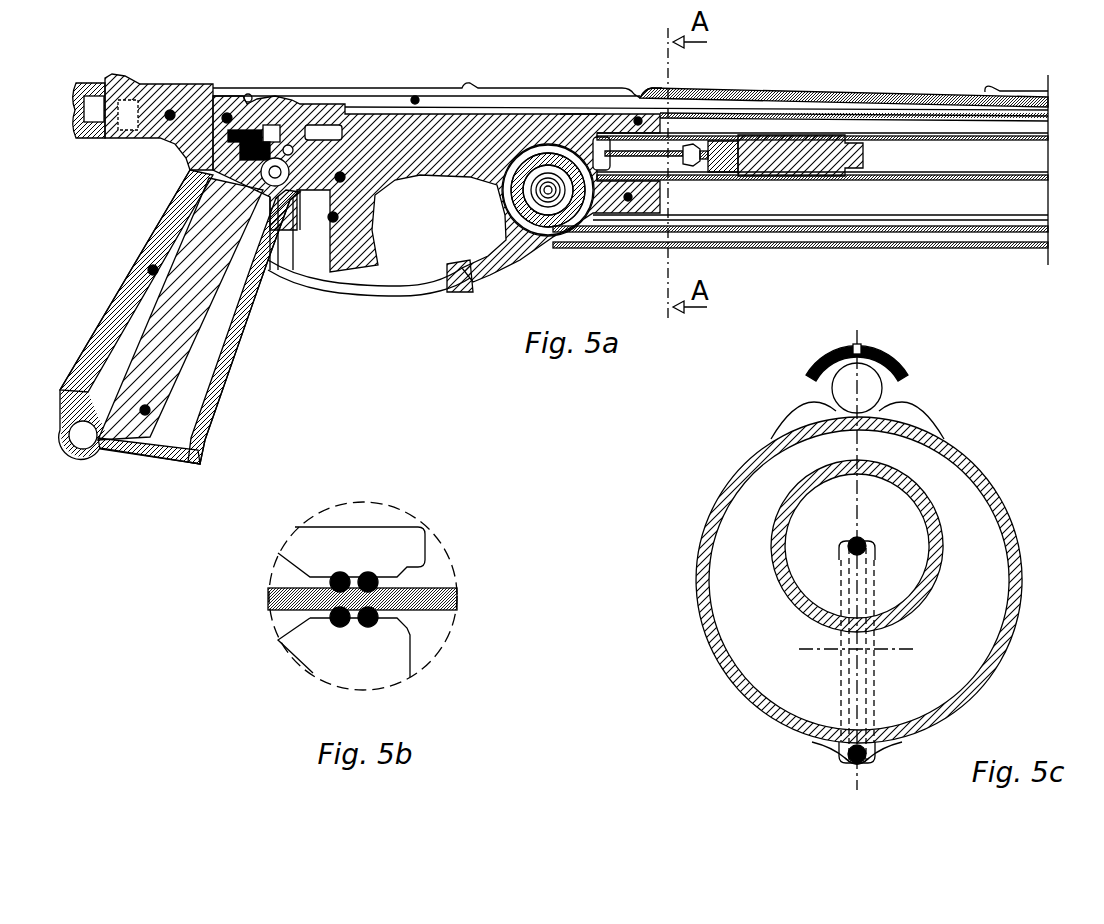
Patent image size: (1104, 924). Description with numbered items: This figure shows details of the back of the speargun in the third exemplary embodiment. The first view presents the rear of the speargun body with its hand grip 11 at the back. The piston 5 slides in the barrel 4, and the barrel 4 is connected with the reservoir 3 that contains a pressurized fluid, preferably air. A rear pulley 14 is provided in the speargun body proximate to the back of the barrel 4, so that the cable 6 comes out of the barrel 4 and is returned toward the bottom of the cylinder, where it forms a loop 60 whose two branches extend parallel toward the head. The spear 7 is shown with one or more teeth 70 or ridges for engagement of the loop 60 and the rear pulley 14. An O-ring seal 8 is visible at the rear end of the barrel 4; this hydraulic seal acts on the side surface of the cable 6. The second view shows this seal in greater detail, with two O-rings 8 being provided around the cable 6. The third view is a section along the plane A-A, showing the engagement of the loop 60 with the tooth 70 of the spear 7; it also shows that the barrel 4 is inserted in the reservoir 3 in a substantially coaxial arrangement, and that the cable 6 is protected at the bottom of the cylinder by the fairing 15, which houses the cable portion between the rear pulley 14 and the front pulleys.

In FIG. 5A, the reservoir 3 is at (950, 200).
In FIG. 5C, the reservoir 3 is at (999, 610).
In FIG. 5A, the barrel 4 is at (963, 150).
In FIG. 5C, the barrel 4 is at (913, 532).
In FIG. 5A, the piston 5 is at (797, 135).
In FIG. 5A, the cable 6 is at (763, 234).
In FIG. 5B, the cable 6 is at (444, 588).
In FIG. 5C, the cable 6 is at (863, 542).
In FIG. 5A, the spear 7 is at (507, 88).
In FIG. 5C, the spear 7 is at (867, 388).
In FIG. 5A, the O-ring seal 8 is at (586, 122).
In FIG. 5B, the O-ring seal 8 is at (342, 572).
In FIG. 5A, the hand grip 11 is at (112, 289).
In FIG. 5A, the rear pulley 14 is at (553, 238).
In FIG. 5C, the rear pulley 14 is at (878, 680).
In FIG. 5A, the fairing 15 is at (824, 248).
In FIG. 5C, the fairing 15 is at (867, 771).
In FIG. 5A, the loop 60 is at (857, 89).
In FIG. 5C, the loop 60 is at (806, 362).
In FIG. 5A, the tooth 70 is at (645, 88).